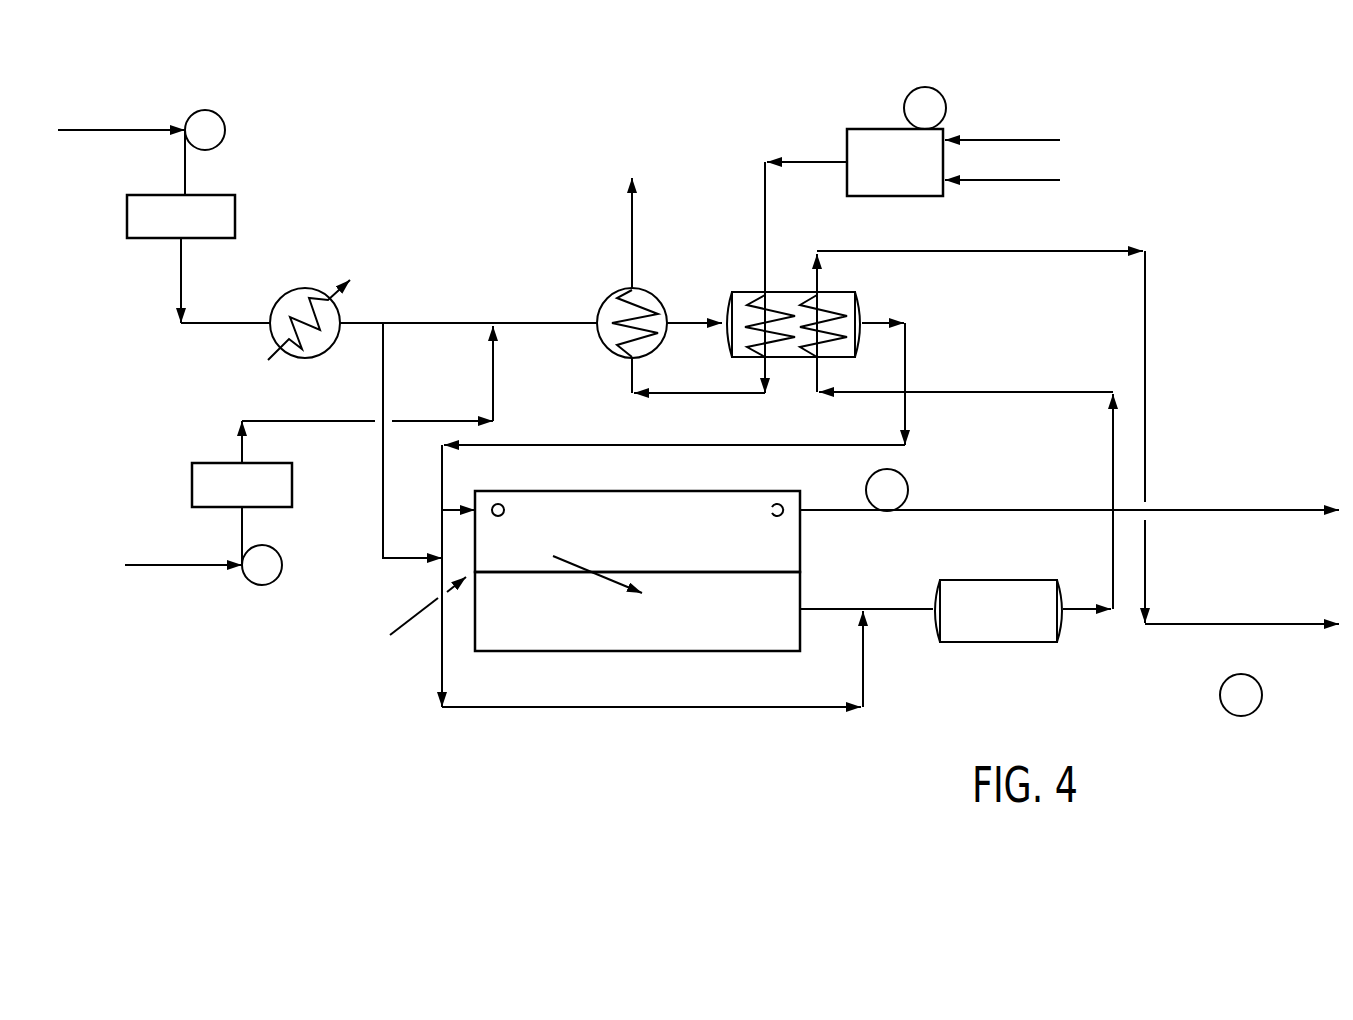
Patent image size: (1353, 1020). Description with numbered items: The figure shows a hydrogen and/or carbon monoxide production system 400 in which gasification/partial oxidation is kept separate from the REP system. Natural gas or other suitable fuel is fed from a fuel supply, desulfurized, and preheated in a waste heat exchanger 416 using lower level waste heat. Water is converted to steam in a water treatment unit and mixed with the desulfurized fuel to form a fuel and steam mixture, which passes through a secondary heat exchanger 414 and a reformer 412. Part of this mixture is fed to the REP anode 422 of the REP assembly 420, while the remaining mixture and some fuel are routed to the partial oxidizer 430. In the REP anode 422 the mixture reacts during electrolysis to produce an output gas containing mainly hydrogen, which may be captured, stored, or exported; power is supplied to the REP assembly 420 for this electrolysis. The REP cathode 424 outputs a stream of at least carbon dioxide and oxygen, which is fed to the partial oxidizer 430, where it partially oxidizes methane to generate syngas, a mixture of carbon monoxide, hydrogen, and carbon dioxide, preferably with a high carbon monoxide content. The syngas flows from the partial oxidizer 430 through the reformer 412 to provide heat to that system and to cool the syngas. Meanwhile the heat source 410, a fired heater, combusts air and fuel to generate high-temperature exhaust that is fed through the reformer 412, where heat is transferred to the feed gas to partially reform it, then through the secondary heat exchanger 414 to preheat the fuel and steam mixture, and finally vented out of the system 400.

The hydrogen and/or carbon monoxide production system 400 is at (460, 212).
The heat source 410 is at (865, 129).
The reformer 412 is at (860, 302).
The secondary heat exchanger 414 is at (610, 293).
The waste heat exchanger 416 is at (305, 358).
The REP assembly 420 is at (592, 662).
The REP anode 422 is at (720, 491).
The REP cathode 424 is at (720, 651).
The partial oxidizer 430 is at (933, 587).